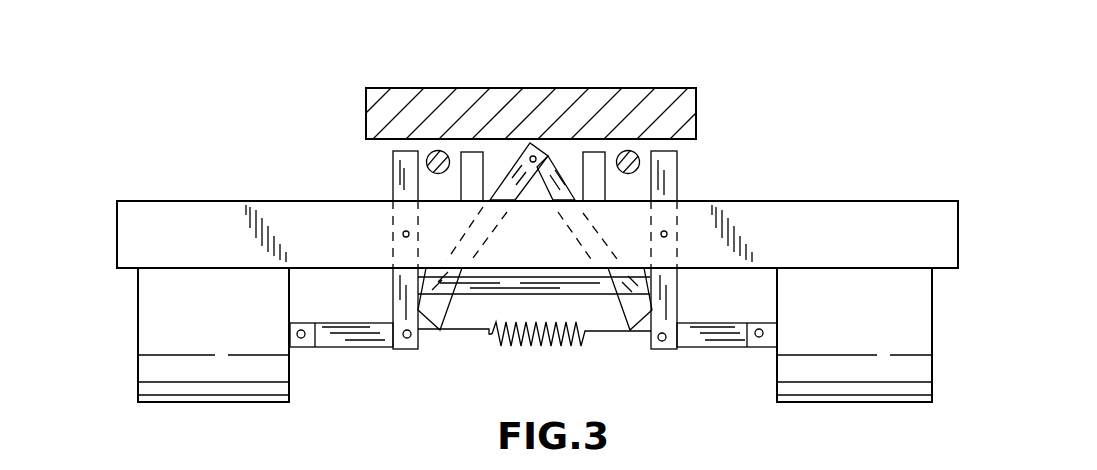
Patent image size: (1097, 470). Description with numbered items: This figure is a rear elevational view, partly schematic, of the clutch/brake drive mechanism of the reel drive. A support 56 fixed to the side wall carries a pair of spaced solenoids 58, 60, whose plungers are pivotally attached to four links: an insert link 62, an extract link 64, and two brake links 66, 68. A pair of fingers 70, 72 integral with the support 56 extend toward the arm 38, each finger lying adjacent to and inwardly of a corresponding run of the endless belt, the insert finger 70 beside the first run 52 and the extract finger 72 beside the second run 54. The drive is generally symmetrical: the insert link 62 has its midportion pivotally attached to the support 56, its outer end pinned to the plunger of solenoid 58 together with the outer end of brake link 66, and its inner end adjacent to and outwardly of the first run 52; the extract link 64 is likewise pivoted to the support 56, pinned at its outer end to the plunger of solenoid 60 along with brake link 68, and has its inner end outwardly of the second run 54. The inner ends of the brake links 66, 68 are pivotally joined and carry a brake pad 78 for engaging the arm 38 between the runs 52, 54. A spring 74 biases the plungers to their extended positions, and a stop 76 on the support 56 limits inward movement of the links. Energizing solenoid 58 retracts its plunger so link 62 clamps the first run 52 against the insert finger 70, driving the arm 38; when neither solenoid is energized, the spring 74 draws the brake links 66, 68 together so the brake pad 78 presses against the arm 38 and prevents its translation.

The arm 38 is at (643, 87).
The first run 52 is at (442, 151).
The second run 54 is at (636, 152).
The support 56 is at (207, 213).
The solenoid 58 is at (278, 370).
The solenoid 60 is at (785, 371).
The insert link 62 is at (393, 180).
The extract link 64 is at (680, 289).
The brake link 66 is at (432, 303).
The brake link 68 is at (640, 307).
The insert finger 70 is at (473, 160).
The extract finger 72 is at (597, 160).
The spring 74 is at (542, 348).
The stop 76 is at (513, 278).
The brake pad 78 is at (550, 145).